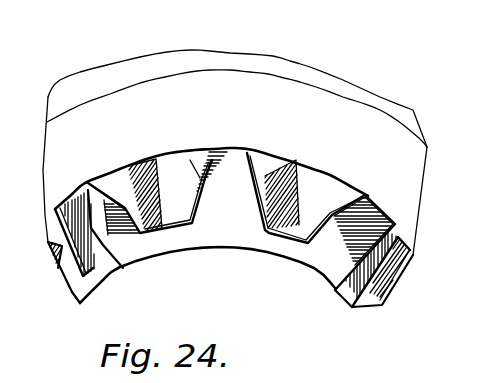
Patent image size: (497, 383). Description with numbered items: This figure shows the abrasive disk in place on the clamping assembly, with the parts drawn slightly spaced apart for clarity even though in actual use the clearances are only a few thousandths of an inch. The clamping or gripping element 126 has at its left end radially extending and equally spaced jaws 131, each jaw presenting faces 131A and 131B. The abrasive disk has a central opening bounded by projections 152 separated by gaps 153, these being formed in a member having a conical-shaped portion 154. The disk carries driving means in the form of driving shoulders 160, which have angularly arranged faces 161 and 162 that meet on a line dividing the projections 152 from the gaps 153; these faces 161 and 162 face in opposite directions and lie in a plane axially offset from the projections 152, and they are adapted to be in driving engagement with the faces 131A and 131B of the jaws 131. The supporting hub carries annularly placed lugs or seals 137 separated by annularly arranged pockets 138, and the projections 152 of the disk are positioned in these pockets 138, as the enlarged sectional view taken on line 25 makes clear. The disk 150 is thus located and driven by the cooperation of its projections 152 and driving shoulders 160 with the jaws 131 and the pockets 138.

The ring member 150 is at (274, 53).
The conical-shaped portion 154 is at (123, 78).
The gaps 153 is at (250, 150).
The clamping or gripping element 126 is at (222, 255).
The jaws 131 is at (216, 150).
The face of jaw 131A is at (190, 160).
The face of jaw 131B is at (289, 153).
The projections 152 is at (193, 188).
The driving shoulders 160 is at (114, 180).
The face of driving shoulder 161 is at (208, 150).
The face of driving shoulder 162 is at (170, 153).
The lugs or seals 137 is at (77, 196).
The pockets 138 is at (72, 293).
The section line 25- 25 is at (318, 33).